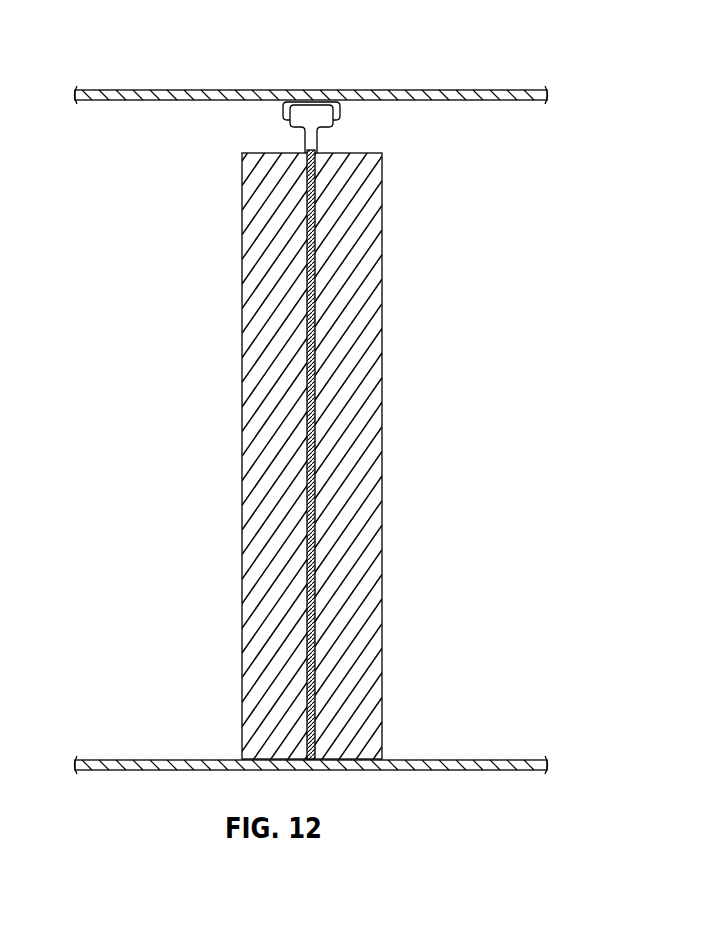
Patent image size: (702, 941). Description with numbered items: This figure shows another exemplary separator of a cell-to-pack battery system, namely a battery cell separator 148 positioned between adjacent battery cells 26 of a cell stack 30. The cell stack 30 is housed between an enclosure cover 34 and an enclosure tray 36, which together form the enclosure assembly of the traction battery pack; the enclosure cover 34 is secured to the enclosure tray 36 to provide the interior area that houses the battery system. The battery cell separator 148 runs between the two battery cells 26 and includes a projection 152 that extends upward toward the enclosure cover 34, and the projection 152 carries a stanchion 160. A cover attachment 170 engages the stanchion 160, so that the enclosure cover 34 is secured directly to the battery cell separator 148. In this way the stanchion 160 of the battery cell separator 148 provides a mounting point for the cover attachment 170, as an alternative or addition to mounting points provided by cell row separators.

The battery cell 26 is at (352, 364).
The cell stack 30 is at (192, 270).
The enclosure cover 34 is at (445, 90).
The enclosure tray 36 is at (466, 770).
The battery cell separator 148 is at (318, 280).
The projection 152 is at (313, 142).
The stanchion 160 is at (315, 110).
The cover attachment 170 is at (283, 112).